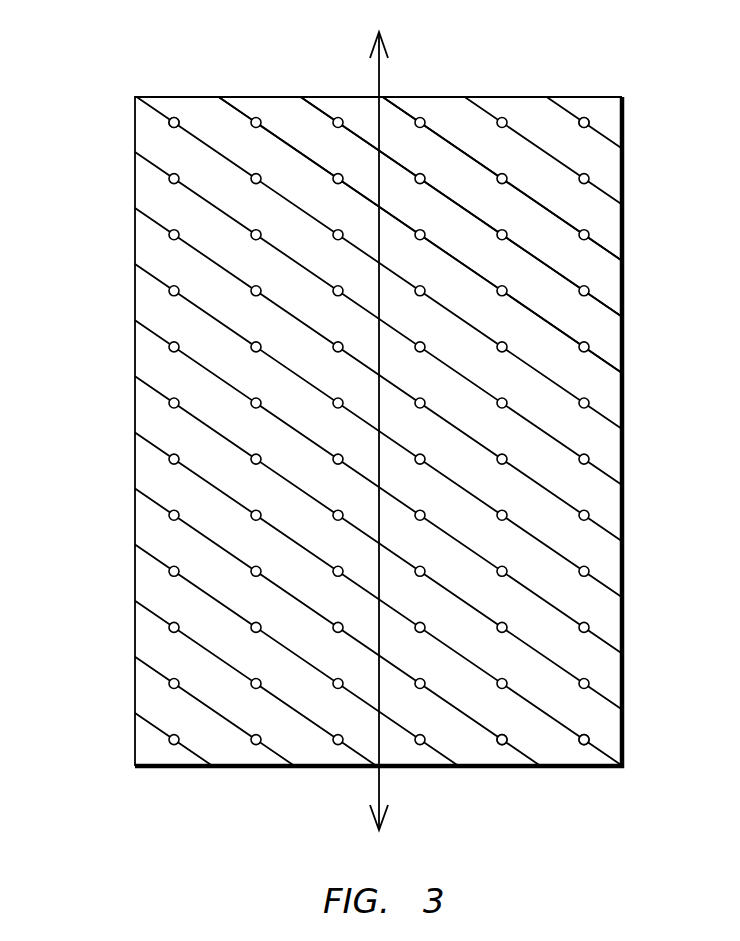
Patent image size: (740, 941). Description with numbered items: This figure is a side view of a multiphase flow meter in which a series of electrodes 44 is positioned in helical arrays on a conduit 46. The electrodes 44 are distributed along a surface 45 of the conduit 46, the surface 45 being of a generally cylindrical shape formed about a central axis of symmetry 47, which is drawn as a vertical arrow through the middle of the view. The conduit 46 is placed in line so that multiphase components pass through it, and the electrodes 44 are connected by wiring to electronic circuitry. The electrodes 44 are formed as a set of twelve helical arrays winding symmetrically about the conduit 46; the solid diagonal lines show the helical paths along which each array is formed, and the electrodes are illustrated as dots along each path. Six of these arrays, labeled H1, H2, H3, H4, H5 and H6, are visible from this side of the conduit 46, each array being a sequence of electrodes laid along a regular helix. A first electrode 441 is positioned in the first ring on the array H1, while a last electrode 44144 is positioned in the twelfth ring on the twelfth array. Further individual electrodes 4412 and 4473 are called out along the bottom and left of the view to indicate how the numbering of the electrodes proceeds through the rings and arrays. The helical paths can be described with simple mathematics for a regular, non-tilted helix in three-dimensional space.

The electrodes 44 is at (590, 121).
The first electrode 441 is at (590, 121).
The electrode 4412 is at (502, 746).
The electrode 4473 is at (169, 124).
The last electrode 44144 is at (585, 746).
The surface 45 is at (597, 385).
The conduit 46 is at (625, 293).
The central axis of symmetry 47 is at (377, 788).
The helical array H1 is at (564, 109).
The helical array H2 is at (482, 109).
The helical array H3 is at (400, 109).
The helical array H4 is at (318, 109).
The helical array H5 is at (236, 109).
The helical array H6 is at (154, 109).